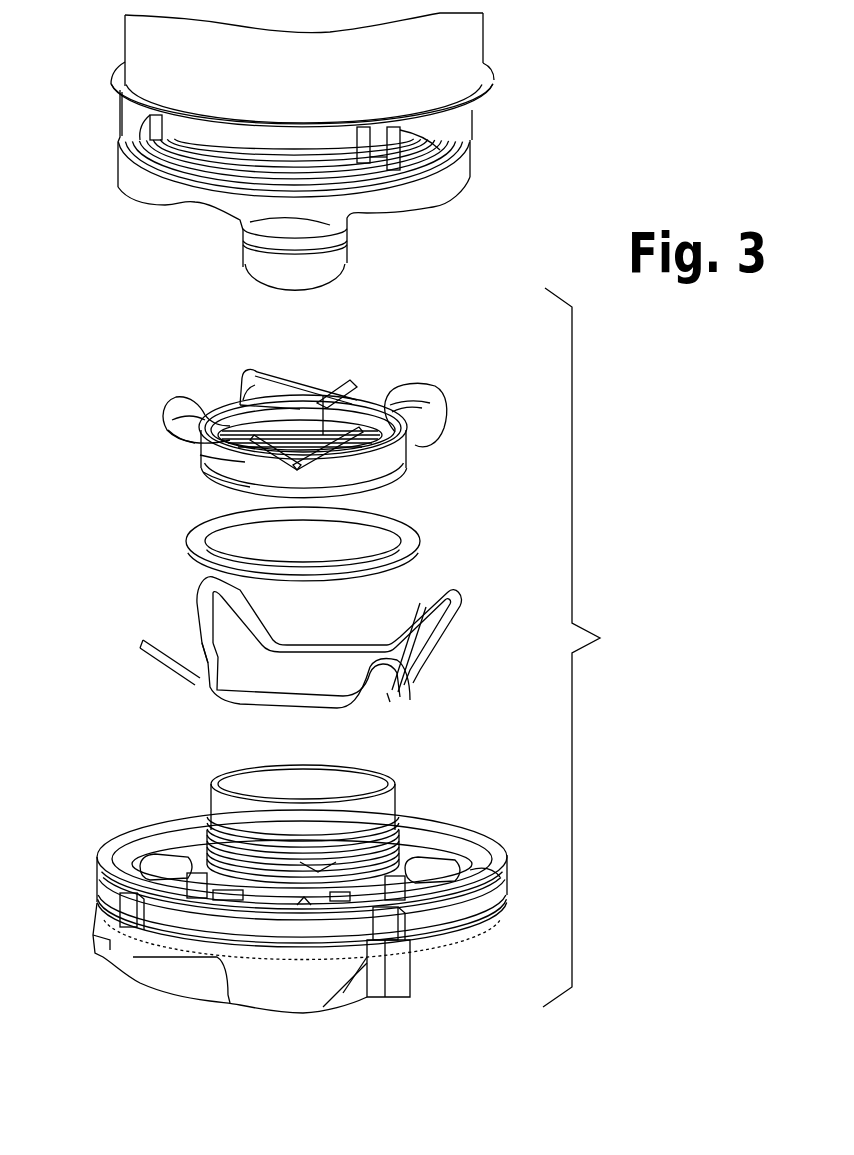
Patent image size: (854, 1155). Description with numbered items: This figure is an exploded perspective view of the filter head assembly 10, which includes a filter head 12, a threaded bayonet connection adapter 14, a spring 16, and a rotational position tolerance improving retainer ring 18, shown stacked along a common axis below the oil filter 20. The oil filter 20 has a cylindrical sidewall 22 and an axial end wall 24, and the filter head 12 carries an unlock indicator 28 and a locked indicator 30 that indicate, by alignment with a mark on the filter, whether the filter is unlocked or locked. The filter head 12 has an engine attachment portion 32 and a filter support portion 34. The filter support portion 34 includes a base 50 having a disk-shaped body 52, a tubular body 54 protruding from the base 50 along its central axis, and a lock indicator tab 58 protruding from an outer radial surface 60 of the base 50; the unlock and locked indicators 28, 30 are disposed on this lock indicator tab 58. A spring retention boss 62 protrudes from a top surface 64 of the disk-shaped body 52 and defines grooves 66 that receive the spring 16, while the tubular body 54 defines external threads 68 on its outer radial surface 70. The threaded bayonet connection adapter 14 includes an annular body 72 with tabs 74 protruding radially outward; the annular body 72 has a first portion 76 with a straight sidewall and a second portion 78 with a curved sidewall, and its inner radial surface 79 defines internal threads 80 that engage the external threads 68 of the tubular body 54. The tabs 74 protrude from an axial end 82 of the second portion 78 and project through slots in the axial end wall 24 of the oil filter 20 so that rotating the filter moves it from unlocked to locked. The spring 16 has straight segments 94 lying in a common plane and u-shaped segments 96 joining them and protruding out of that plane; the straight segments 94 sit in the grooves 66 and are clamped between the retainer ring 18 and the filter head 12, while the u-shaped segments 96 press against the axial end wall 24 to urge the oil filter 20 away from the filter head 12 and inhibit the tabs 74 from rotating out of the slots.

The filter head assembly 10 is at (584, 647).
The filter head 12 is at (291, 892).
The threaded bayonet connection adapter 14 is at (321, 405).
The spring 16 is at (299, 645).
The rotational position tolerance improving retainer ring 18 is at (415, 537).
The oil filter 20 is at (318, 151).
The cylindrical sidewall 22 is at (155, 46).
The axial end wall 24 is at (125, 183).
The unlock indicator 28 is at (392, 925).
The locked indicator 30 is at (120, 905).
The engine attachment portion 32 is at (417, 955).
The filter support portion 34 is at (97, 835).
The base 50 is at (95, 868).
The disk-shaped body 52 is at (498, 830).
The tubular body 54 is at (337, 776).
The lock indicator tab 58 is at (292, 958).
The outer radial surface 60 is at (500, 880).
The spring retention boss 62 is at (175, 860).
The top surface 64 is at (440, 878).
The grooves 66 is at (205, 880).
The external threads 68 is at (318, 860).
The outer radial surface 70 is at (293, 837).
The annular body 72 is at (410, 455).
The tabs 74 is at (287, 385).
The first portion 76 is at (205, 483).
The second portion 78 is at (200, 457).
The inner radial surface 79 is at (229, 421).
The internal threads 80 is at (332, 420).
The axial end 82 is at (395, 396).
The straight segments 94 is at (195, 650).
The u-shaped segments 96 is at (207, 588).